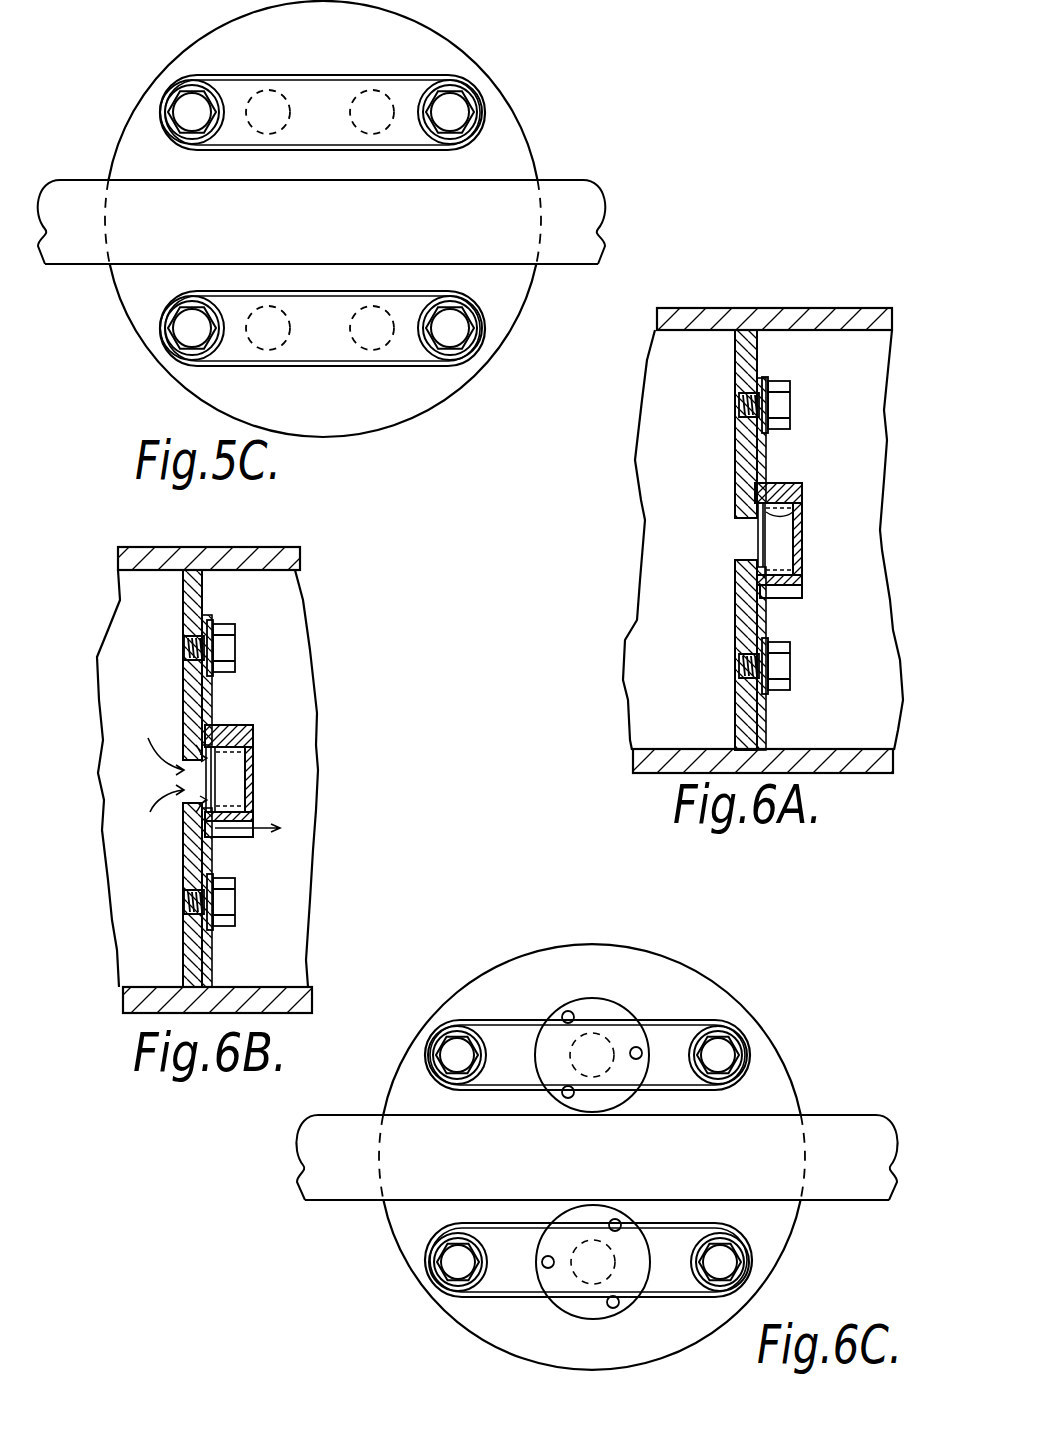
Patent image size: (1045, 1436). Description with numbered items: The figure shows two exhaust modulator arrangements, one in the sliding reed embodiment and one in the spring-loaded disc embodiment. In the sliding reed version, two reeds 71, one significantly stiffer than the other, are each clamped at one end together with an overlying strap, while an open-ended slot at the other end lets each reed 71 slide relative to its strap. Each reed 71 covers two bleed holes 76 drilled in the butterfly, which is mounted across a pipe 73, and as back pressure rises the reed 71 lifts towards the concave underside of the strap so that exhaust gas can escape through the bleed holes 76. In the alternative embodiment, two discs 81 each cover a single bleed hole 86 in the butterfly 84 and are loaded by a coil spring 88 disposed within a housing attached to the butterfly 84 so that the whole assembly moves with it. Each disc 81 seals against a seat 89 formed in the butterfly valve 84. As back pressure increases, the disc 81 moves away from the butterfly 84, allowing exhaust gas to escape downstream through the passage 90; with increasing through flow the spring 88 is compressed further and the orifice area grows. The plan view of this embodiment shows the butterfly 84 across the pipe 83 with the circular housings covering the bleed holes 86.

In FIG. 5C, the reed 71 is at (414, 90).
In FIG. 5C, the pipe 73 is at (583, 190).
In FIG. 5C, the bleed hole 76 is at (250, 103).
In FIG. 6A, the disc 81 is at (788, 528).
In FIG. 6C, the pipe 83 is at (848, 1130).
In FIG. 6A, the butterfly 84 is at (752, 728).
In FIG. 6B, the butterfly 84 is at (200, 970).
In FIG. 6A, the bleed hole 86 is at (736, 548).
In FIG. 6B, the bleed hole 86 is at (184, 800).
In FIG. 6C, the bleed hole 86 is at (600, 1032).
In FIG. 6A, the coil spring 88 is at (788, 546).
In FIG. 6B, the coil spring 88 is at (238, 742).
In FIG. 6B, the seat 89 is at (222, 763).
In FIG. 6B, the passage 90 is at (232, 838).